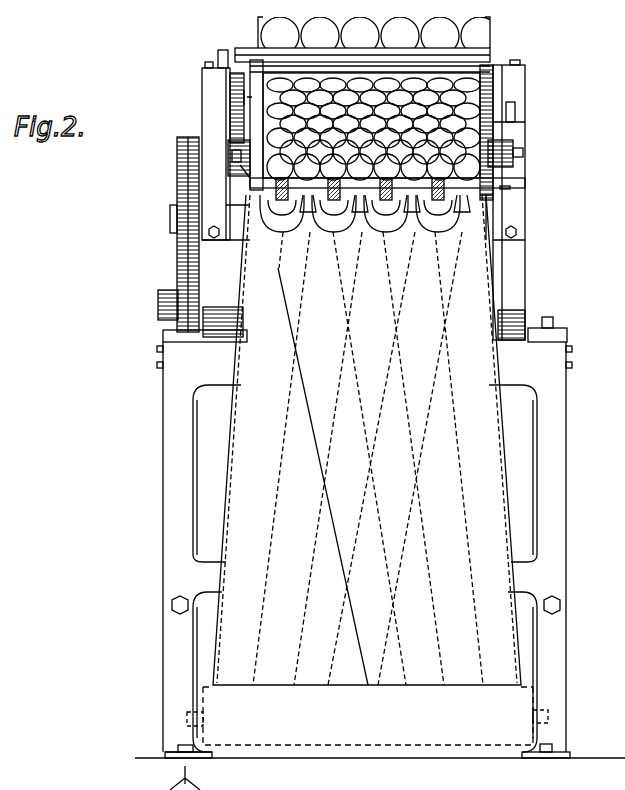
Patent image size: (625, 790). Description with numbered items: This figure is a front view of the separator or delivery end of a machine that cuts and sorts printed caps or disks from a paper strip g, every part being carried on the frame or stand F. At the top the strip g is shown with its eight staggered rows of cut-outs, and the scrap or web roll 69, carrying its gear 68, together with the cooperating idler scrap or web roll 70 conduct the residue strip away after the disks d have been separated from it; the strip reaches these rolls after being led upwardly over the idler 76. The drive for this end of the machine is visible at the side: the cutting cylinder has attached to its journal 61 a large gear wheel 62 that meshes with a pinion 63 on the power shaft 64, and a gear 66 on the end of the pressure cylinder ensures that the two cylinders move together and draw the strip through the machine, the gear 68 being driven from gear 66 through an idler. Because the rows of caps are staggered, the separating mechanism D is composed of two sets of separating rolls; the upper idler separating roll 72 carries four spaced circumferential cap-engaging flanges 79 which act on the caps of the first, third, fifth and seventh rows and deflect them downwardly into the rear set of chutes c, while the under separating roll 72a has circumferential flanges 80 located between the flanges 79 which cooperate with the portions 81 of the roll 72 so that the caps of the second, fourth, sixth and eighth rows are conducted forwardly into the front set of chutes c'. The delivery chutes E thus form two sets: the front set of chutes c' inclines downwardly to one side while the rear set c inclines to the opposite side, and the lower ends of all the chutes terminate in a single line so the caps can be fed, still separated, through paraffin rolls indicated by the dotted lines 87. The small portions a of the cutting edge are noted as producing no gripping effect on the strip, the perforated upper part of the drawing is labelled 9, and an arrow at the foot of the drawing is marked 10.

The perforated hopper plate 9 is at (476, 103).
The strip g is at (479, 30).
The idler scrap or web roll 70 is at (256, 54).
The gear 68 is at (237, 85).
The scrap or web roll 69 is at (250, 97).
The gear 66 is at (240, 136).
The large gear wheel 62 is at (178, 170).
The journal 61 is at (172, 222).
The pinion 63 is at (182, 287).
The power shaft 64 is at (160, 302).
The idler 76 is at (246, 170).
The cap-engaging flanges 79 is at (339, 180).
The portions of the roll 72 81 is at (408, 182).
The separating roll 72 is at (512, 165).
The separating mechanism D is at (478, 184).
The under separating roll 72a is at (452, 226).
The circumferential flanges 80 is at (284, 232).
The disks d is at (276, 228).
The delivery chutes E is at (528, 473).
The frame or stand F is at (568, 550).
The rear set of chutes c is at (334, 458).
The front set of chutes c' is at (430, 458).
The section line 10 is at (222, 775).
The portions of the cutting edge a is at (207, 770).
The paraffin rolls 87 is at (367, 748).